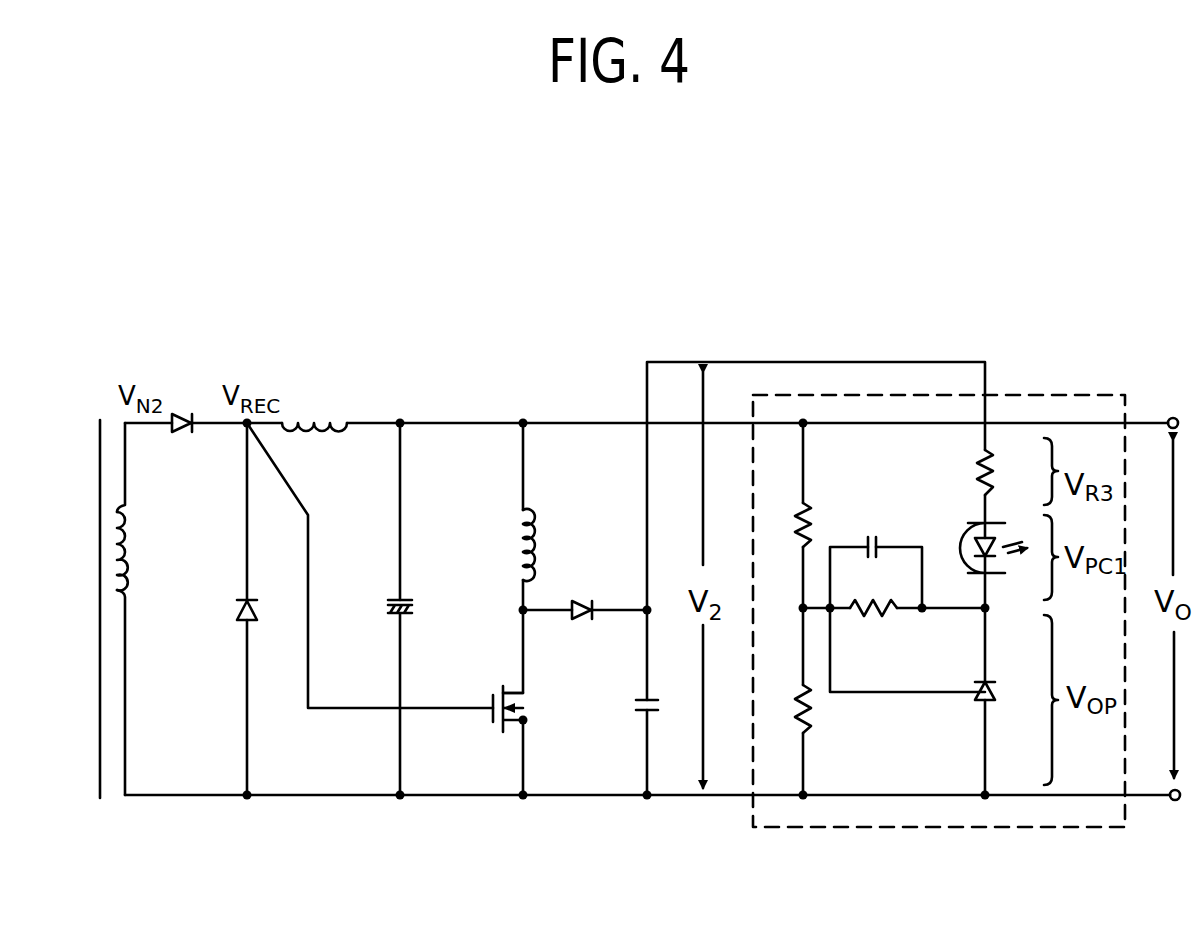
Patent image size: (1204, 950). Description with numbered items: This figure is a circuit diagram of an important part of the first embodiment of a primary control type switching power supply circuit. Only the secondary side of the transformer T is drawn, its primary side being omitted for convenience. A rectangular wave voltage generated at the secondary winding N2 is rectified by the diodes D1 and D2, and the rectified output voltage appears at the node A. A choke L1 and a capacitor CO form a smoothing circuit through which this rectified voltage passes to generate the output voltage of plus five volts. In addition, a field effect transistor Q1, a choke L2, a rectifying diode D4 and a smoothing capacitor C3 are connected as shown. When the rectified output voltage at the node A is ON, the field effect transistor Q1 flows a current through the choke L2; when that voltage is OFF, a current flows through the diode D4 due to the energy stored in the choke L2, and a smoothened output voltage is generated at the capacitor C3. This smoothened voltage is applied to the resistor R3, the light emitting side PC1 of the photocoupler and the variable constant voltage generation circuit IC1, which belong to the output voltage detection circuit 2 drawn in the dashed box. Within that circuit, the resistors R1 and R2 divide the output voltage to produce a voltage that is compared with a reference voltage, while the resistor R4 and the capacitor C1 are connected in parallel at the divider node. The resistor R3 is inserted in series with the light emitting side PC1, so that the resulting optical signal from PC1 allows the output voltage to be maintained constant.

The transformer T is at (99, 587).
The secondary winding N2 is at (149, 551).
The diode D1 is at (191, 402).
The choke L1 is at (314, 401).
The node A is at (235, 442).
The diode D2 is at (211, 609).
The capacitor CO is at (375, 611).
The choke L2 is at (495, 545).
The rectifying diode D4 is at (593, 590).
The field effect transistor Q1 is at (532, 709).
The smoothing capacitor C3 is at (624, 711).
The output voltage detection circuit 2 is at (810, 828).
The resistor R1 is at (784, 525).
The resistor R2 is at (823, 710).
The resistor R3 is at (1006, 478).
The resistor R4 is at (873, 596).
The capacitor C1 is at (867, 532).
The light emitting side of the photocoupler PC1 is at (1001, 566).
The variable constant voltage generation circuit IC1 is at (1012, 690).